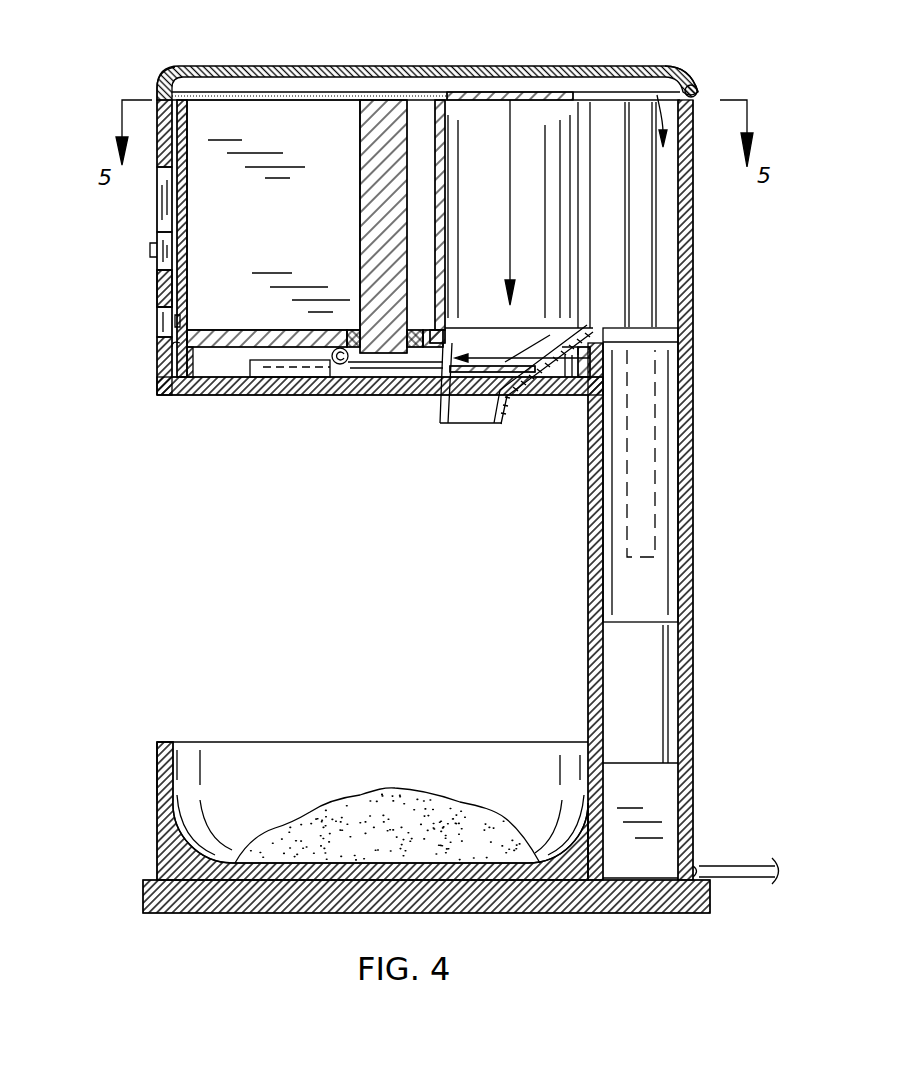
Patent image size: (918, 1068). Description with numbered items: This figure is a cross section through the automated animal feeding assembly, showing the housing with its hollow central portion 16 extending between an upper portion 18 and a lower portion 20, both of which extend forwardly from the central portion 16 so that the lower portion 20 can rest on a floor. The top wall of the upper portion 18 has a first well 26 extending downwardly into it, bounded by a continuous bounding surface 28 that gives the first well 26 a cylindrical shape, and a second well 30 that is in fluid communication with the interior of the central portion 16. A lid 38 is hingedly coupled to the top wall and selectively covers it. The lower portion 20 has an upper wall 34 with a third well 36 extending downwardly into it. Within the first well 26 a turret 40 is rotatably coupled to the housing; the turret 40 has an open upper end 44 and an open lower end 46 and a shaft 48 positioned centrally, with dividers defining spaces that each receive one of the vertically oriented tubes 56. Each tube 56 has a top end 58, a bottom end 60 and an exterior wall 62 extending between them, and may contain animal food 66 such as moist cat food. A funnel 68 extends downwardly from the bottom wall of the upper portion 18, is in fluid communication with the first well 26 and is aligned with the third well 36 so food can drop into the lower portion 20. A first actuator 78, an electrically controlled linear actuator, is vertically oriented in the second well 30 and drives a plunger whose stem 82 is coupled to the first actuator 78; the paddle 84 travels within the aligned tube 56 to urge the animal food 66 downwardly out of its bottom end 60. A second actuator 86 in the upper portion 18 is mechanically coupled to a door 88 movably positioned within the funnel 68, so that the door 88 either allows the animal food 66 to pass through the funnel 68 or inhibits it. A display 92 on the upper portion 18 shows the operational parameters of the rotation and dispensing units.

The central portion 16 is at (694, 525).
The upper portion 18 is at (157, 167).
The lower portion 20 is at (157, 803).
The first well 26 is at (174, 68).
The bounding surface 28 is at (172, 152).
The second well 30 is at (667, 80).
The upper wall 34 is at (164, 742).
The third well 36 is at (313, 770).
The lid 38 is at (383, 66).
The turret 40 is at (180, 267).
The upper end 44 is at (183, 94).
The lower end 46 is at (174, 343).
The shaft 48 is at (407, 143).
The tubes 56 is at (440, 300).
The top end 58 is at (438, 100).
The bottom end 60 is at (450, 340).
The exterior wall 62 is at (437, 272).
The animal food 66 is at (414, 794).
The funnel 68 is at (503, 398).
The first actuator 78 is at (655, 445).
The stem 82 is at (628, 92).
The paddle 84 is at (545, 92).
The second actuator 86 is at (245, 367).
The door 88 is at (472, 372).
The display 92 is at (157, 223).